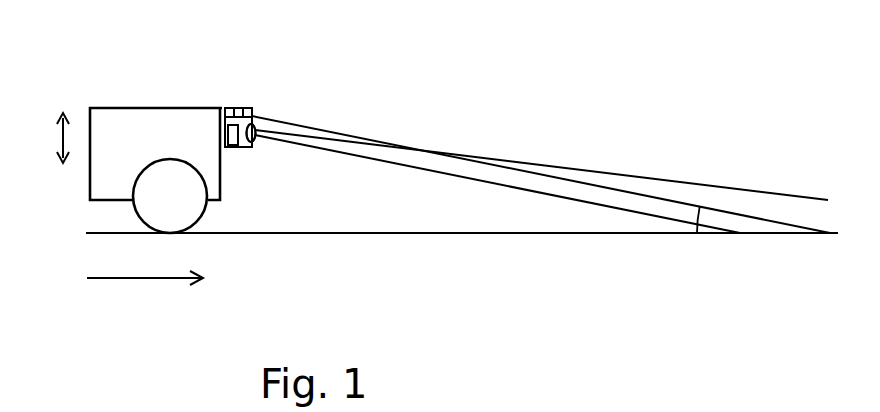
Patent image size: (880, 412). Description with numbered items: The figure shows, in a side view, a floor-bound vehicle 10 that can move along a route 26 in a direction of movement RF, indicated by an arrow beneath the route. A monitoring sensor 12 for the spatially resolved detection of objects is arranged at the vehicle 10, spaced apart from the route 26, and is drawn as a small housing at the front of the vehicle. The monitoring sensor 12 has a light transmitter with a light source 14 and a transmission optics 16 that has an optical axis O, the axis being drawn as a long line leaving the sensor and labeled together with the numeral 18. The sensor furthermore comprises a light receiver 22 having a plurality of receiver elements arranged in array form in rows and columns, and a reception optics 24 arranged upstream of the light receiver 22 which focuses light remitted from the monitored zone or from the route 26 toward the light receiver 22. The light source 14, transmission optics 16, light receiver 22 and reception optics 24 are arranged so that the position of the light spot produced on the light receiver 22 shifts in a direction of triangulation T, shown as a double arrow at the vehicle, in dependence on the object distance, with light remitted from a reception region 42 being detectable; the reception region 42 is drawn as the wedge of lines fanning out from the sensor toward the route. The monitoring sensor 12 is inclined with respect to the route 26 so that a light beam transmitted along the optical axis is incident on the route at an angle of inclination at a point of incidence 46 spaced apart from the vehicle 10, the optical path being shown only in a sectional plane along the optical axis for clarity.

The floor-bound vehicle 10 is at (153, 127).
The monitoring sensor 12 is at (250, 148).
The light source 14 is at (232, 107).
The transmission optics 16 is at (253, 107).
The optical axis 18 is at (328, 127).
The light receiver 22 is at (237, 147).
The reception optics 24 is at (255, 137).
The route 26 is at (557, 234).
The reception region 42 is at (399, 157).
The point of incidence 46 is at (822, 238).
The direction of triangulation T is at (62, 128).
The direction of movement RF is at (145, 297).